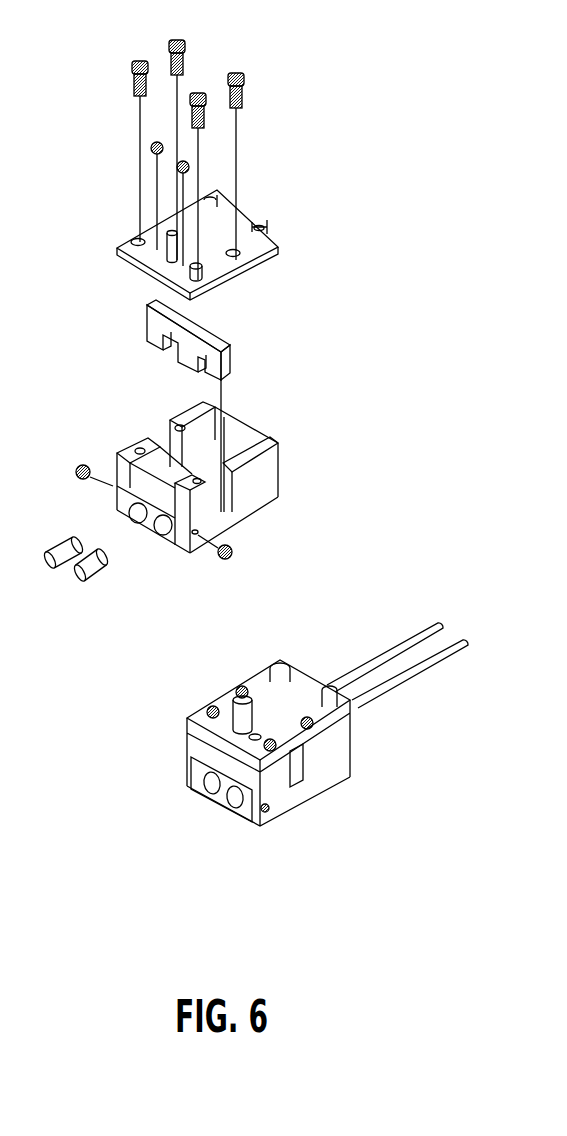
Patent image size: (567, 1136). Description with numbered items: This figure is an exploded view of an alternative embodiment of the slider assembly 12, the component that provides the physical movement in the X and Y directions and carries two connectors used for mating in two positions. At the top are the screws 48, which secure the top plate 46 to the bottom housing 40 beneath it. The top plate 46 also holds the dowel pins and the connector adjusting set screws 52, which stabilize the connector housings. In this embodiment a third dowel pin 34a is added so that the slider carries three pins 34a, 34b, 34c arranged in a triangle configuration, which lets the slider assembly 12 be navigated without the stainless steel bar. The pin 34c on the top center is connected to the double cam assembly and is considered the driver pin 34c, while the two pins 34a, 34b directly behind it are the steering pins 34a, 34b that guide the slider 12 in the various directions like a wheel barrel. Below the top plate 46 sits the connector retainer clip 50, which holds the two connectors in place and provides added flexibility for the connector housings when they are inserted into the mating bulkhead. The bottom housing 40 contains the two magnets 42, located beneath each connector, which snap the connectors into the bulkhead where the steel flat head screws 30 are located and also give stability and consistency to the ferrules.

The slider assembly 12 is at (364, 830).
The steel flat head screws 30 is at (233, 557).
The steering pin 34a is at (217, 193).
The steering pin 34b is at (267, 227).
The driver pin 34c is at (158, 240).
The bottom housing 40 is at (252, 487).
The magnets 42 is at (77, 577).
The top plate 46 is at (137, 268).
The screws 48 is at (243, 88).
The connector retainer clip 50 is at (158, 330).
The set screws 52 is at (186, 262).